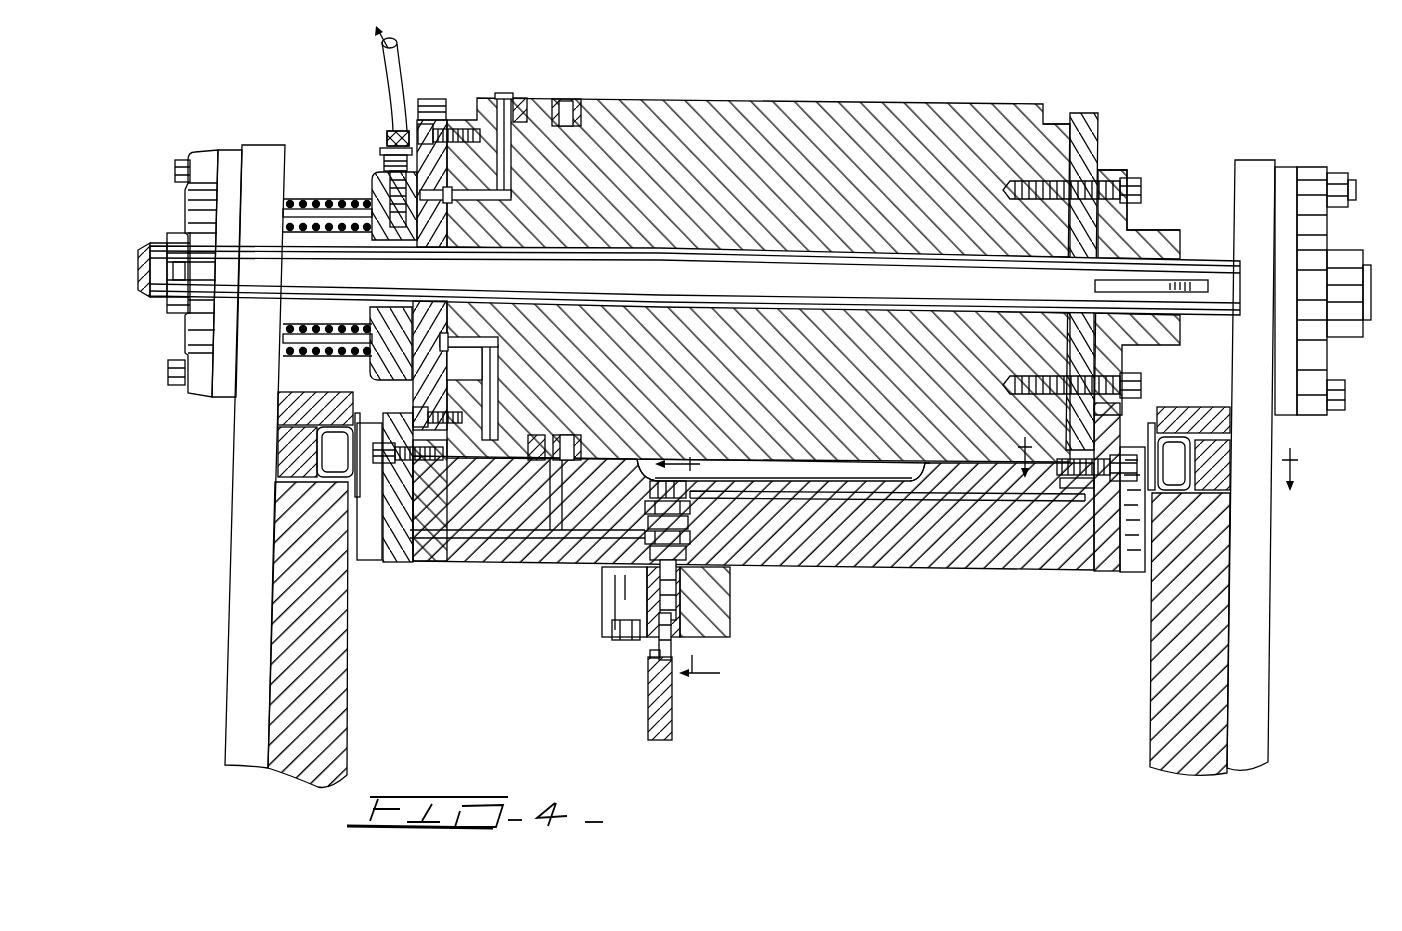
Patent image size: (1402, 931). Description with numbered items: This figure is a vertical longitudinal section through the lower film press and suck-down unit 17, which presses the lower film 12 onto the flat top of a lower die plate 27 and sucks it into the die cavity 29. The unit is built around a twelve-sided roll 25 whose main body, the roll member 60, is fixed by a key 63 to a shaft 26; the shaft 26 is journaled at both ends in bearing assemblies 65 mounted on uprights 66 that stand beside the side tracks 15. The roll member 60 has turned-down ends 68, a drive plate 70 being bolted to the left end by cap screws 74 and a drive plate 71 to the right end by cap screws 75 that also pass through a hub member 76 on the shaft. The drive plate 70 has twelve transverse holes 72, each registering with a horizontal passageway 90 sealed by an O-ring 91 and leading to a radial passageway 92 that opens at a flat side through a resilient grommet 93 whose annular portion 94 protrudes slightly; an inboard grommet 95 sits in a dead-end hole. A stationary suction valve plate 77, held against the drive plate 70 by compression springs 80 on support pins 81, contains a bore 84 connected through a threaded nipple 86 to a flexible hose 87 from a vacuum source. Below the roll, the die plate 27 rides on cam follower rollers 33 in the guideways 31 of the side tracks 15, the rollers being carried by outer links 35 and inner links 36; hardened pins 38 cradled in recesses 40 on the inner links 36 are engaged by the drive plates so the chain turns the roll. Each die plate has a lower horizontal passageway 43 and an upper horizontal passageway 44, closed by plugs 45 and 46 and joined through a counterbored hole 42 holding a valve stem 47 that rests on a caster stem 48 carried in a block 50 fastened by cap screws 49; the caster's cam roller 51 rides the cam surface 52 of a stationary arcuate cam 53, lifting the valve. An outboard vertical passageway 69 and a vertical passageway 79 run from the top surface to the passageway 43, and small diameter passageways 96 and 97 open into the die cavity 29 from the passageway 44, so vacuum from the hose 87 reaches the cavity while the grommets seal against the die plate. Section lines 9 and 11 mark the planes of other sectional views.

The section line 9- 9 is at (1152, 457).
The section line 11- 11 is at (698, 573).
The lower film 12 is at (860, 456).
The side tracks 15 is at (347, 714).
The lower film press and suck-down unit 17 is at (1156, 102).
The roll 25 is at (806, 95).
The shaft 26 is at (1215, 256).
The lower die plate 27 is at (975, 602).
The die cavity 29 is at (845, 481).
The cam tracks or guideways 31 is at (275, 473).
The cam follower rollers 33 is at (330, 453).
The outer links 35 is at (1132, 572).
The inner links 36 is at (1105, 572).
The hardened pins 38 is at (393, 528).
The recess 40 is at (1043, 480).
The counterbored hole 42 is at (735, 570).
The lower horizontal passageway 43 is at (600, 578).
The upper horizontal passageway 44 is at (870, 497).
The plug 45 is at (427, 537).
The plug 46 is at (1077, 480).
The valve stem 47 is at (660, 592).
The caster stem 48 is at (665, 612).
The cap screws 49 is at (625, 642).
The block 50 is at (732, 610).
The cam roller 51 is at (672, 640).
The cam surface 52 is at (648, 657).
The stationary arcuate cam 53 is at (672, 700).
The roll member 60 is at (813, 254).
The key 63 is at (1193, 292).
The bearing assemblies 65 is at (185, 212).
The uprights 66 is at (230, 603).
The turned-down ends 68 is at (463, 118).
The outboard vertical passageway 69 is at (482, 530).
The drive plate 70 is at (440, 99).
The drive plate 71 is at (1080, 113).
The transverse holes 72 is at (413, 388).
The cap screws 74 is at (400, 100).
The cap screws 75 is at (1138, 183).
The hub member 76 is at (1142, 228).
The suction valve plate 77 is at (372, 190).
The vertical passageway 79 is at (553, 535).
The compression springs 80 is at (325, 214).
The support pins 81 is at (358, 218).
The bore 84 is at (404, 208).
The threaded nipple 86 is at (384, 160).
The flexible hose 87 is at (386, 90).
The horizontal passageway 90 is at (478, 338).
The O-rings 91 is at (462, 335).
The radial passageway 92 is at (506, 180).
The resilient grommet 93 is at (527, 100).
The annular portion 94 is at (500, 93).
The grommet 95 is at (573, 99).
The small diameter passageway 96 is at (701, 469).
The small diameter passageway 97 is at (918, 481).